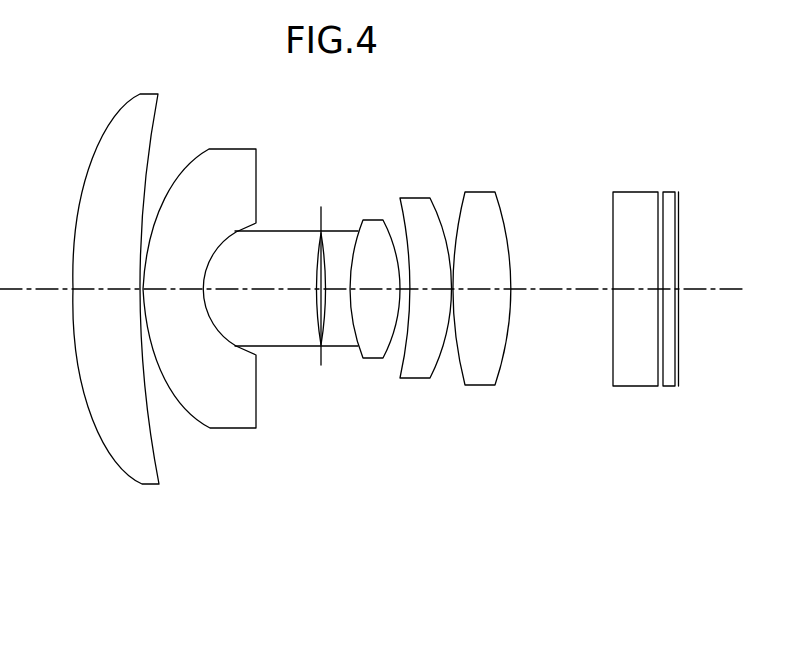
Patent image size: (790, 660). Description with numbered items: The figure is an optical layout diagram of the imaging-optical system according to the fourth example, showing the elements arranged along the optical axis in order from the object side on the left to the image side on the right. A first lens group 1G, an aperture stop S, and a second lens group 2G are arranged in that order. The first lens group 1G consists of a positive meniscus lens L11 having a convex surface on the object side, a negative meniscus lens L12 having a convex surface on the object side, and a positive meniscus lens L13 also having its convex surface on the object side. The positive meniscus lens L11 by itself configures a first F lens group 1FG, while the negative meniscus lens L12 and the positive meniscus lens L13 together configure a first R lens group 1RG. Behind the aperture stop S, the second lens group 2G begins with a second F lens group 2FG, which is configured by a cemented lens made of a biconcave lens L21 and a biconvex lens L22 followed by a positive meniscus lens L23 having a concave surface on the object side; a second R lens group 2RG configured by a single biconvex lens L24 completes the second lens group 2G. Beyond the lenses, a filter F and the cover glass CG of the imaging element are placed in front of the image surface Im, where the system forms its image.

The positive meniscus lens L11 is at (123, 280).
The negative meniscus lens L12 is at (193, 280).
The positive meniscus lens L13 is at (297, 280).
The aperture stop S is at (320, 213).
The biconcave lens L21 is at (343, 338).
The biconvex lens L22 is at (372, 346).
The positive meniscus lens L23 is at (429, 360).
The biconvex lens L24 is at (492, 365).
The filter F is at (623, 197).
The cover glass CG is at (666, 197).
The image surface Im is at (678, 200).
The first F lens group 1FG is at (159, 506).
The first R lens group 1RG is at (305, 506).
The second F lens group 2FG is at (453, 506).
The second R lens group 2RG is at (515, 506).
The first lens group 1G is at (298, 563).
The second lens group 2G is at (518, 562).